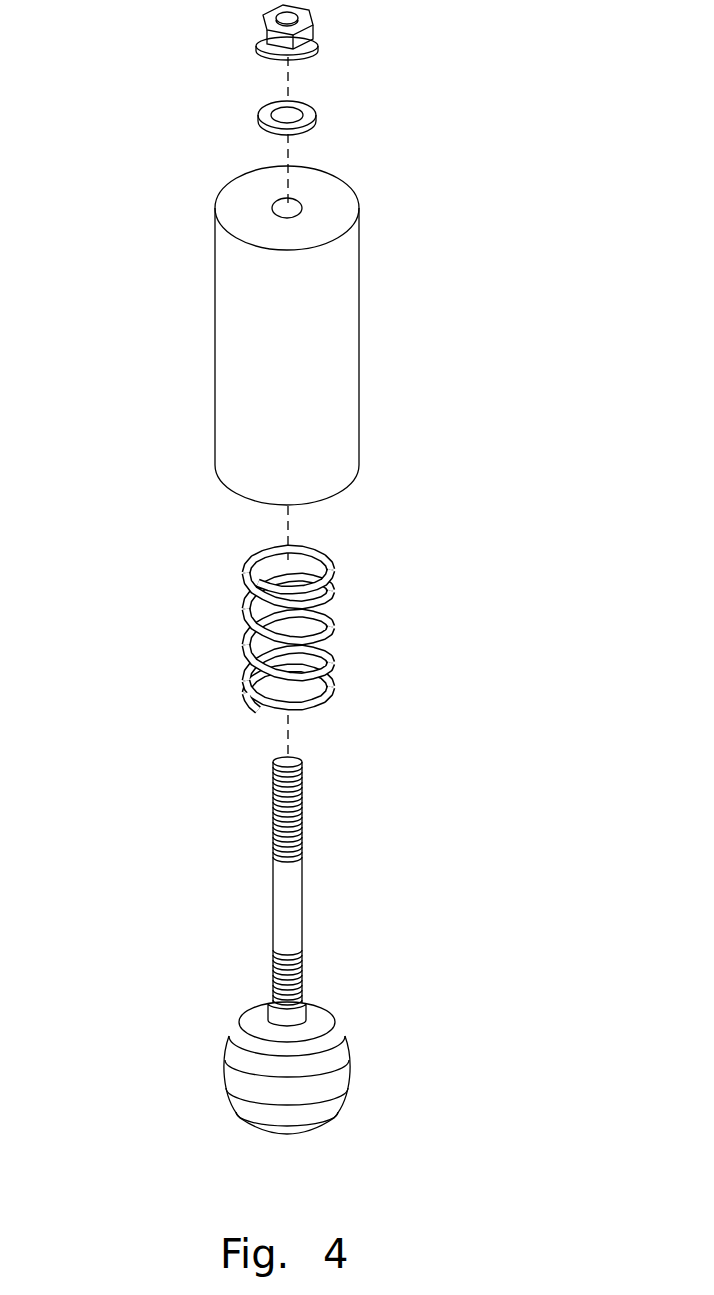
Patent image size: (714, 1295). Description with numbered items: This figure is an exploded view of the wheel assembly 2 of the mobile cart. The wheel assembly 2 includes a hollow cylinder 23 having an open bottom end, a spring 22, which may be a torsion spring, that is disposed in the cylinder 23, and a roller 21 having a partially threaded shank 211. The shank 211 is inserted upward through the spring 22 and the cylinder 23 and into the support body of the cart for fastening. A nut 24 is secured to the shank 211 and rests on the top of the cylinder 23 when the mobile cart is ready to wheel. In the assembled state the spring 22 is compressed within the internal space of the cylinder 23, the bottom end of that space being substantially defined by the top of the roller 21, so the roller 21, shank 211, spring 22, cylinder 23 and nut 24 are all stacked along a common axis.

The wheel assembly 2 is at (497, 452).
The roller 21 is at (252, 1100).
The partially threaded shank 211 is at (282, 893).
The spring 22 is at (246, 615).
The hollow cylinder 23 is at (262, 365).
The nut 24 is at (272, 33).